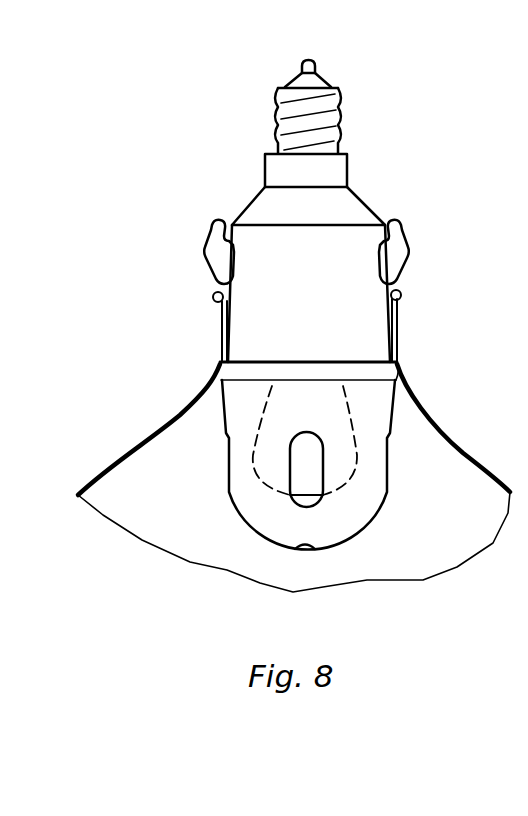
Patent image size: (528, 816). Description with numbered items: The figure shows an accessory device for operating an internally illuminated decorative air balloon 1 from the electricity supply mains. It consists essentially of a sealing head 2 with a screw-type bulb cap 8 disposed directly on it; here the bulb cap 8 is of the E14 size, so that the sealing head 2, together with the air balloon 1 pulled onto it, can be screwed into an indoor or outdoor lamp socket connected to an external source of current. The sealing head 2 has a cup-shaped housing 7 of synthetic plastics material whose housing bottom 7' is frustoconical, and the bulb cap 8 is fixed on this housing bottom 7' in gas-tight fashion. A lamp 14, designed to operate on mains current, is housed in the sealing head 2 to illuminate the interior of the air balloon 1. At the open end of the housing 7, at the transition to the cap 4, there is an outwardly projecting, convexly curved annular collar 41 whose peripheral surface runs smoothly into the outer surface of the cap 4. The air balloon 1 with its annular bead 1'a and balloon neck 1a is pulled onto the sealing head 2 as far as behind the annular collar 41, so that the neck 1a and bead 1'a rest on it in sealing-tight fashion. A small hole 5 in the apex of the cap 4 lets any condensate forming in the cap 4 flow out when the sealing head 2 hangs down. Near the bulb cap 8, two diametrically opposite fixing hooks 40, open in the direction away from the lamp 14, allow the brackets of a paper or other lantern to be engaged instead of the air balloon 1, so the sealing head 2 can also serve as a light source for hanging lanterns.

The air balloon 1 is at (294, 478).
The balloon neck 1a is at (400, 330).
The annular bead 1'a is at (343, 296).
The sealing head 2 is at (314, 307).
The cap 4 is at (372, 499).
The small hole 5 is at (305, 553).
The housing 7 is at (350, 293).
The housing bottom 7' is at (325, 195).
The screw-type bulb cap 8 is at (340, 118).
The lamp 14 is at (283, 473).
The fixing hooks 40 is at (215, 245).
The annular collar 41 is at (232, 370).